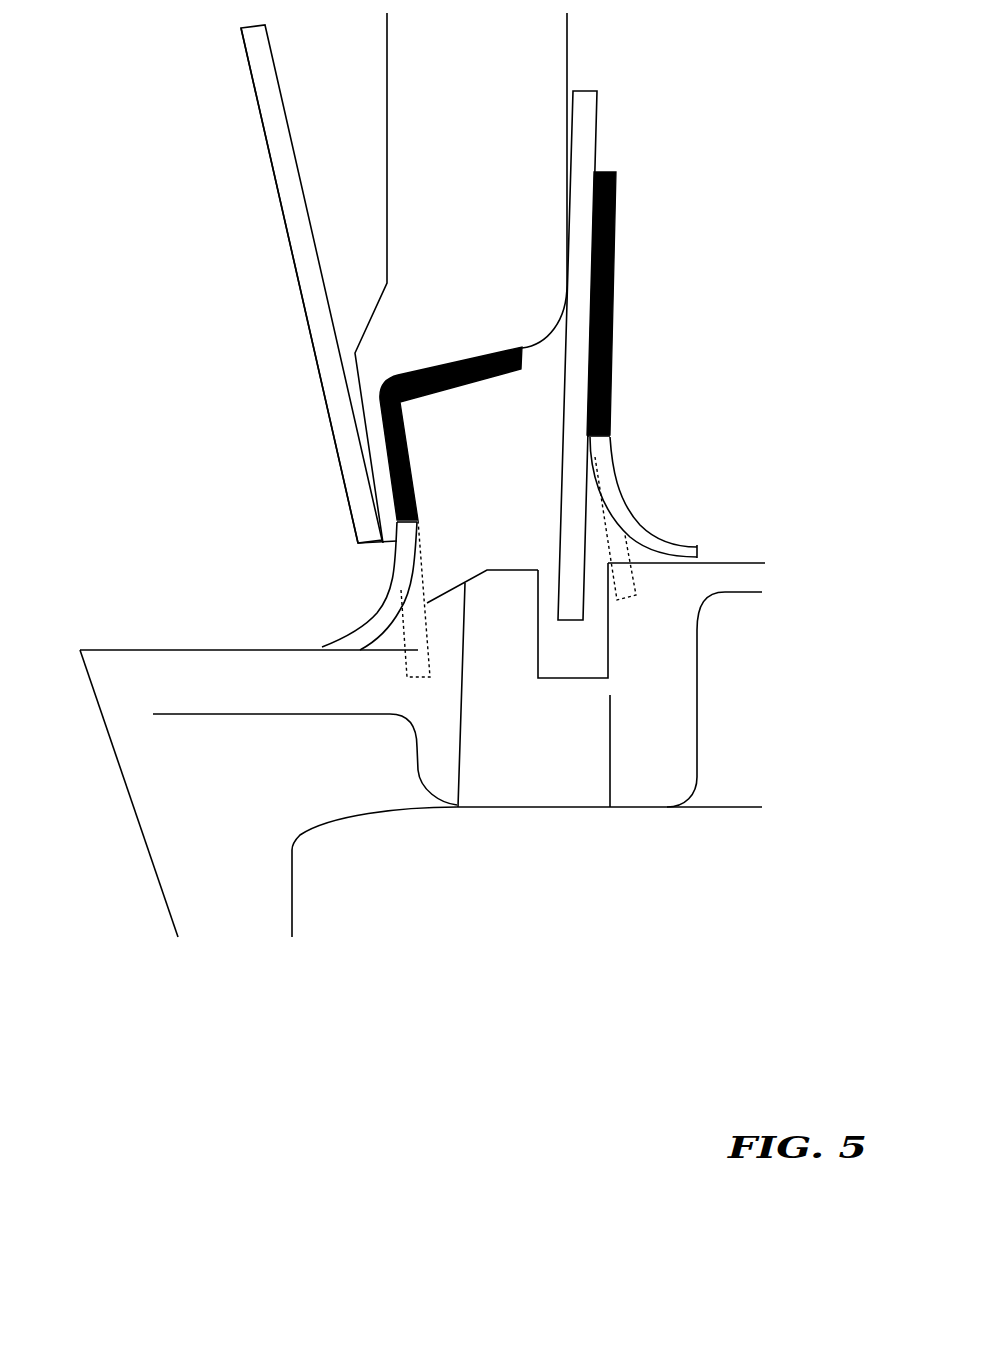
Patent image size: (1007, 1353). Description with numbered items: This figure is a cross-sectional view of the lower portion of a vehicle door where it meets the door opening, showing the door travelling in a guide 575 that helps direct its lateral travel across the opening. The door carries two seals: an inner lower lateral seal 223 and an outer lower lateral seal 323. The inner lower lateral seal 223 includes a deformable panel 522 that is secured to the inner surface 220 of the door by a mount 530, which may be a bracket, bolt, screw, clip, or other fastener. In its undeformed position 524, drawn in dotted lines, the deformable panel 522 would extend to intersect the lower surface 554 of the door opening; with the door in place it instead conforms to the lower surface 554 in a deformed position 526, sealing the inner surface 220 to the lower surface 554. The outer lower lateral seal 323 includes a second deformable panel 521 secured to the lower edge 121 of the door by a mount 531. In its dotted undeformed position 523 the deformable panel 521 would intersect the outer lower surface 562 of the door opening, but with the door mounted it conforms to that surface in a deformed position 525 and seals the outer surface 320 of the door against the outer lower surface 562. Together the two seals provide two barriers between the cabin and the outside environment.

The lower edge 121 is at (209, 293).
The inner surface 220 is at (645, 113).
The inner lower lateral seal 223 is at (759, 302).
The outer surface 320 is at (226, 114).
The outer lower lateral seal 323 is at (139, 463).
The deformable panel 521 is at (357, 591).
The deformable panel 522 is at (666, 506).
The undeformed position 523 is at (417, 617).
The undeformed position 524 is at (637, 513).
The deformed position 525 is at (355, 640).
The deformed position 526 is at (693, 557).
The mount 530 is at (615, 258).
The mount 531 is at (437, 392).
The lower surface 554 is at (748, 550).
The outer lower surface 562 is at (157, 635).
The guide 575 is at (598, 665).